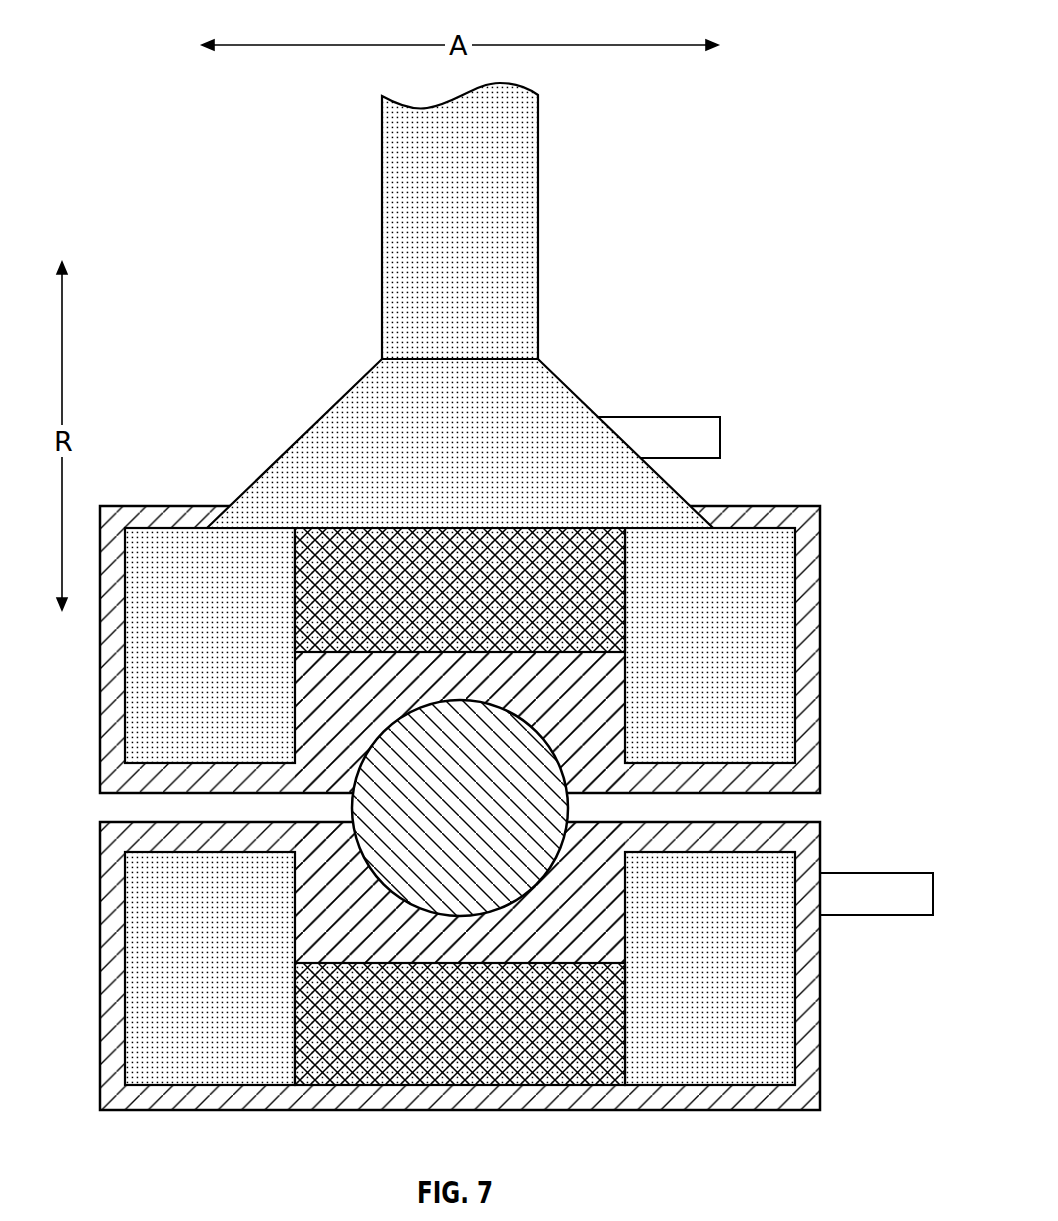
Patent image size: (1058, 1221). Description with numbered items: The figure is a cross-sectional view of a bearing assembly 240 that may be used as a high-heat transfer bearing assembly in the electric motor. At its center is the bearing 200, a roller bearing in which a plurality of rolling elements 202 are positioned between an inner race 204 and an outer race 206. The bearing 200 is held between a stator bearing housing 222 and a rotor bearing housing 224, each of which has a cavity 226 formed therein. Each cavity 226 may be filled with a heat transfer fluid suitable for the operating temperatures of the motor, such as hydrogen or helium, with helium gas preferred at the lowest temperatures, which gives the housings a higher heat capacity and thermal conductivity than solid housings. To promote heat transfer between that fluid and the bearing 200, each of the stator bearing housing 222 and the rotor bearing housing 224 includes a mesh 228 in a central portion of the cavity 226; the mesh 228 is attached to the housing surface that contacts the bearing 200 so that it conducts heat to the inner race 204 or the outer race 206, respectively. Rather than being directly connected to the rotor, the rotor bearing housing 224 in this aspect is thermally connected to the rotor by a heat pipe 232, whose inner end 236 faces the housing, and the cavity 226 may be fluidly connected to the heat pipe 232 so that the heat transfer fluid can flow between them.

The bearing 200 is at (594, 661).
The rolling elements 202 is at (515, 817).
The inner race 204 is at (598, 913).
The outer race 206 is at (603, 672).
The stator bearing housing 222 is at (475, 966).
The rotor bearing housing 224 is at (455, 649).
The cavity 226 is at (228, 652).
The mesh 228 is at (603, 573).
The heat pipe 232 is at (518, 148).
The inner end 236 is at (594, 375).
The bearing assembly 240 is at (432, 305).